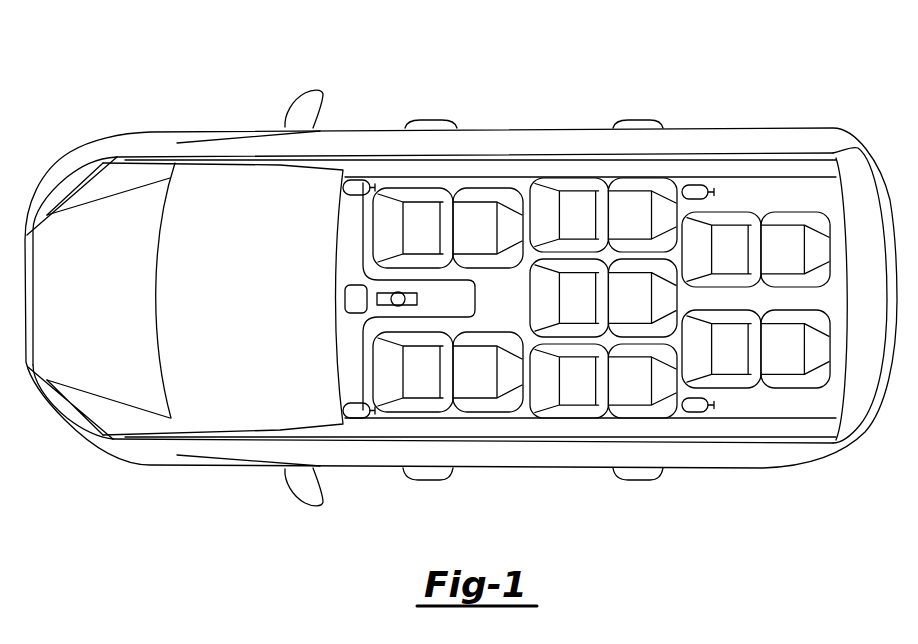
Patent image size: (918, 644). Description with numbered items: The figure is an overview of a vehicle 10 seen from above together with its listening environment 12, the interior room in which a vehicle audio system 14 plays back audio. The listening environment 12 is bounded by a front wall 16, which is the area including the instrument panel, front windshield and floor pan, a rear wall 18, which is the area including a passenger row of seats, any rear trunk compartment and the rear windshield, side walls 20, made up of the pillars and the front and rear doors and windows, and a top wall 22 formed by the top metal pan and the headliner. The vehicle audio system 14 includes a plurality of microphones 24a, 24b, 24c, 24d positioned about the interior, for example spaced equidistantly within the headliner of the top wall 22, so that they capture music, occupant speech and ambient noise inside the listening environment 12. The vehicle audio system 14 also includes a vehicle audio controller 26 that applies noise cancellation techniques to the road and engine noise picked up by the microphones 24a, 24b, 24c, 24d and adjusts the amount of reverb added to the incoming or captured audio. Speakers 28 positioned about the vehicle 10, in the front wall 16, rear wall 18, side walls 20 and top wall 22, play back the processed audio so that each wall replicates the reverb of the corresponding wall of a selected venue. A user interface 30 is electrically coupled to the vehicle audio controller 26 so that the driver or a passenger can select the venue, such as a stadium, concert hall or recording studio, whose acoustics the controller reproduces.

The vehicle 10 is at (798, 42).
The listening environment 12 is at (511, 312).
The vehicle audio system 14 is at (254, 216).
The front wall 16 is at (254, 274).
The rear wall 18 is at (794, 361).
The side walls 20 is at (490, 123).
The top wall 22 is at (581, 212).
The microphone 24a is at (358, 179).
The microphone 24b is at (694, 185).
The microphone 24c is at (356, 419).
The microphone 24d is at (694, 412).
The vehicle audio controller 26 is at (254, 337).
The speakers 28 is at (254, 397).
The user interface 30 is at (191, 307).